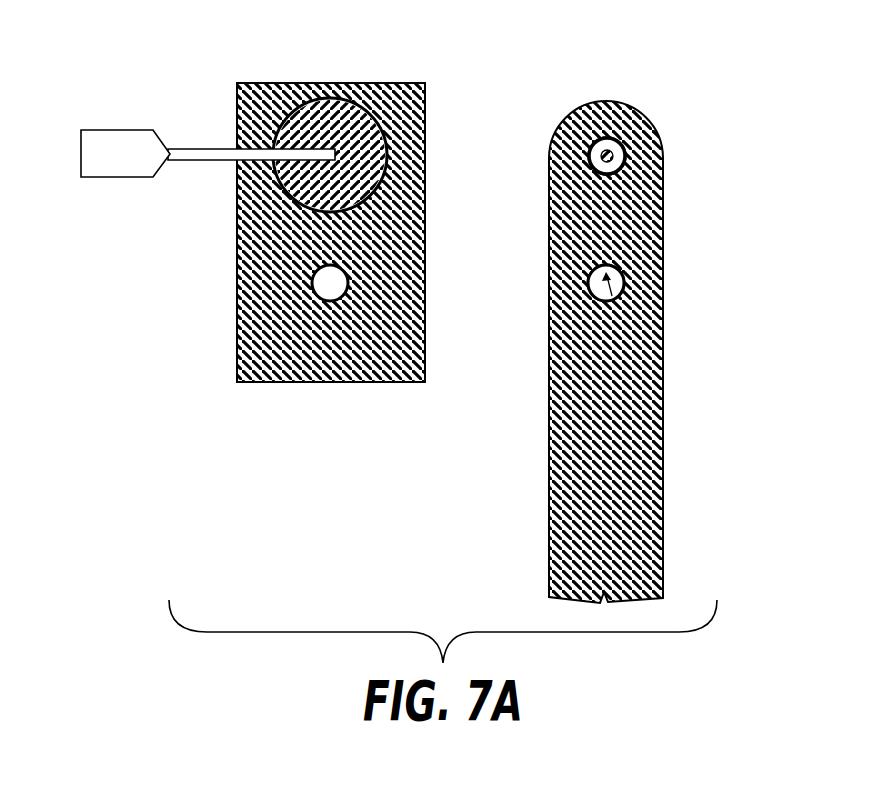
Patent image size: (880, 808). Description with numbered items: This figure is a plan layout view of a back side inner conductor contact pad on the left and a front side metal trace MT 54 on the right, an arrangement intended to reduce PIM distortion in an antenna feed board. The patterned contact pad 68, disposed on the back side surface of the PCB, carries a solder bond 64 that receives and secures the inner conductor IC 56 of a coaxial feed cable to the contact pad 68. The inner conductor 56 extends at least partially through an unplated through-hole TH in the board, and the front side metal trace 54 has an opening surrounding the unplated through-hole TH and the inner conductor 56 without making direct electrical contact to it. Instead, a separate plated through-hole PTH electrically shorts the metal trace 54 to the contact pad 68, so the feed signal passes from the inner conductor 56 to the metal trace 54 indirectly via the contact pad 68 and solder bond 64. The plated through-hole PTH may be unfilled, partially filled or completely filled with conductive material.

The patterned metal trace 54 is at (612, 397).
The inner conductor 56 is at (218, 147).
The solder bond 64 is at (328, 98).
The patterned contact pad 68 is at (425, 135).
The unplated through-hole TH is at (278, 143).
The plated through-hole PTH is at (337, 283).
The inner conductor IC is at (111, 153).
The metal trace MT is at (663, 548).